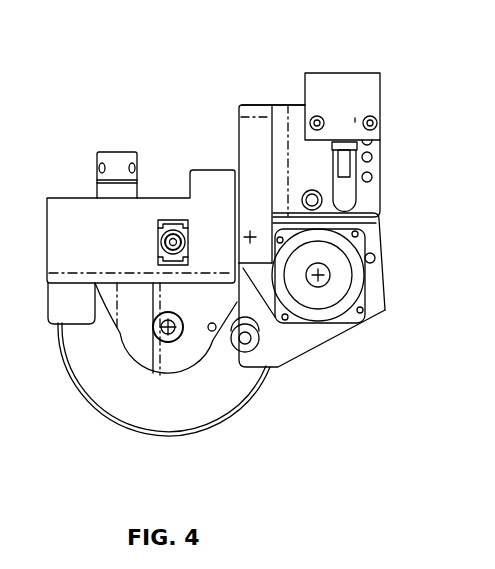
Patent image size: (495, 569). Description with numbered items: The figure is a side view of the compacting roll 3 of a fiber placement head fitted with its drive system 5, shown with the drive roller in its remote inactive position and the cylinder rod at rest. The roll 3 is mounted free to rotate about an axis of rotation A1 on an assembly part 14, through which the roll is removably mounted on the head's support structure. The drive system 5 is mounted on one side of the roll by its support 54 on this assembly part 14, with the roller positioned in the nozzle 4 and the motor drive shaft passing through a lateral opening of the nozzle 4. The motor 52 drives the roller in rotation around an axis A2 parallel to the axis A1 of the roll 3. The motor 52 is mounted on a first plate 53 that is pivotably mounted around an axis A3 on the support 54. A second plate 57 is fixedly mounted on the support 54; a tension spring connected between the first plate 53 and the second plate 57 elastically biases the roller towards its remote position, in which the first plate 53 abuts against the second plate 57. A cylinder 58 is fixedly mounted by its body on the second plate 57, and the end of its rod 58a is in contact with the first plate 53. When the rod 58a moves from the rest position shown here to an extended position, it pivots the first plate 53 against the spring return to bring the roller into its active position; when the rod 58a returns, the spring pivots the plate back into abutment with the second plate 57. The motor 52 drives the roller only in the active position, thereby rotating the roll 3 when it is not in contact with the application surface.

The roll 3 is at (104, 393).
The nozzle 4 is at (280, 378).
The drive system 5 is at (268, 95).
The assembly part 14 is at (63, 198).
The motor 52 is at (347, 290).
The first plate 53 is at (377, 247).
The support 54 is at (242, 109).
The second plate 57 is at (380, 157).
The cylinder 58 is at (346, 77).
The cylinder rod 58a is at (354, 190).
The axis of rotation A1 is at (171, 336).
The axis A2 is at (322, 282).
The axis A3 is at (249, 233).